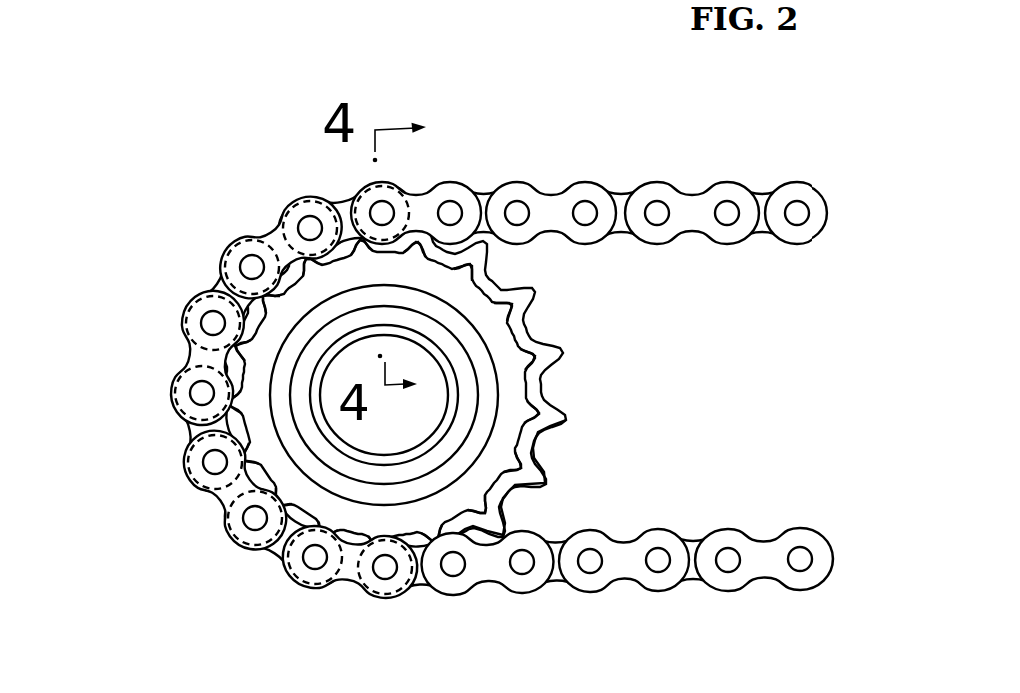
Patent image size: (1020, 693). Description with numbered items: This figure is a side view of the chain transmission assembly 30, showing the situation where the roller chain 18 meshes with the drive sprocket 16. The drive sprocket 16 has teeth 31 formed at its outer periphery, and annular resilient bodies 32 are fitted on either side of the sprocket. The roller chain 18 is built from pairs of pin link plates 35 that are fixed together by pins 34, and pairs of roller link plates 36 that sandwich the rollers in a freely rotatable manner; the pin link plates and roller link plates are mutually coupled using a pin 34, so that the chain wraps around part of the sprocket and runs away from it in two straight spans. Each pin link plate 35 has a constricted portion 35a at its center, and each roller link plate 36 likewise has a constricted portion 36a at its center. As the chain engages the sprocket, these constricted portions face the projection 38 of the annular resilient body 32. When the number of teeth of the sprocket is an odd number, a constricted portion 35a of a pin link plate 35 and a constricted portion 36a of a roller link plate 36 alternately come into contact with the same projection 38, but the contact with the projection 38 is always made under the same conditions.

The chain transmission assembly 30 is at (484, 365).
The drive sprocket 16 is at (545, 390).
The roller chain 18 is at (489, 365).
The teeth 31 is at (266, 236).
The annular resilient bodies 32 is at (528, 330).
The pins 34 is at (203, 312).
The pin link plates 35 is at (180, 330).
The constricted portion 35a is at (560, 234).
The roller link plates 36 is at (215, 282).
The constricted portion 36a is at (650, 236).
The projection 38 is at (550, 437).